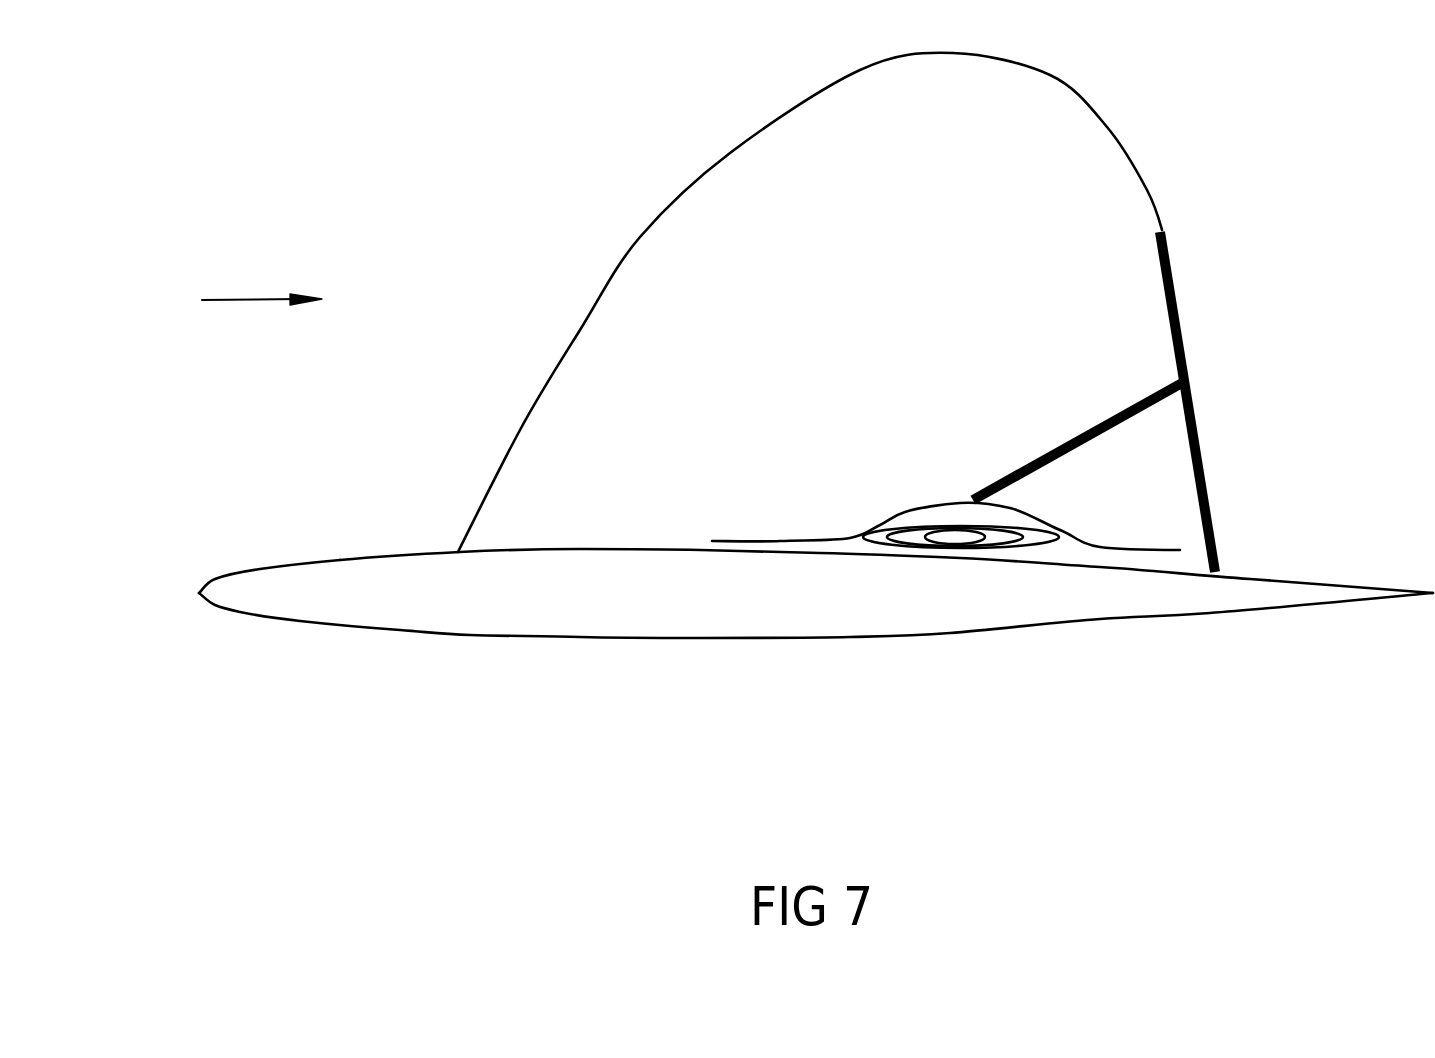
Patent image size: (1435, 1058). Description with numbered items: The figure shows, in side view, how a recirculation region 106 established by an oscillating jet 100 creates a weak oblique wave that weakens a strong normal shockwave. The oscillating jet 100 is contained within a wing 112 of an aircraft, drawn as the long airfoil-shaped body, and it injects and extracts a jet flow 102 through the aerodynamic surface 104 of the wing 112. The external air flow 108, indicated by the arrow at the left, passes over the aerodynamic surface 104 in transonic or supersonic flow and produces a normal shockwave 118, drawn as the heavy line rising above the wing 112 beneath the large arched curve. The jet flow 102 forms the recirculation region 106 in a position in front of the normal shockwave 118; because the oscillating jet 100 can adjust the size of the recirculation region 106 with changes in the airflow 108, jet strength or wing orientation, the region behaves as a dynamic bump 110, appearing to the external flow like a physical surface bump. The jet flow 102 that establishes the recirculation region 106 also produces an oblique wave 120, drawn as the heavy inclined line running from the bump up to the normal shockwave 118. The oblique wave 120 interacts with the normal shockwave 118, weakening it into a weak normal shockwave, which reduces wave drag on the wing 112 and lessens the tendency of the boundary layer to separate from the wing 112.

The oscillating jet 100 is at (980, 560).
The jet flow 102 is at (940, 528).
The aerodynamic surface 104 is at (610, 550).
The recirculation region 106 is at (1005, 522).
The external air flow 108 is at (231, 302).
The dynamic bump 110 is at (946, 476).
The wing 112 is at (230, 620).
The normal shockwave 118 is at (1178, 325).
The oblique wave 120 is at (1101, 420).